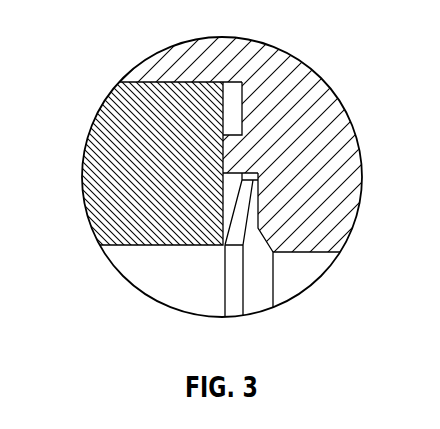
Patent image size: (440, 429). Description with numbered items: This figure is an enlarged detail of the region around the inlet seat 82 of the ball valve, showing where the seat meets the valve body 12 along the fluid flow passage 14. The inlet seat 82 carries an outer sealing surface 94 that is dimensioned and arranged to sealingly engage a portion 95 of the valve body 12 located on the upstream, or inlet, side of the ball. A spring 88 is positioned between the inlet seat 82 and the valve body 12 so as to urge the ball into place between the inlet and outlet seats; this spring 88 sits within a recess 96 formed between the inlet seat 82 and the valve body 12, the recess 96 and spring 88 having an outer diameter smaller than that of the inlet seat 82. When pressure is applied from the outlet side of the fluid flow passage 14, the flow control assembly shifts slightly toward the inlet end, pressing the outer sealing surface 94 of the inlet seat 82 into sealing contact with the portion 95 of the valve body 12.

The valve body 12 is at (358, 142).
The fluid flow passage 14 is at (201, 306).
The inlet seat 82 is at (90, 171).
The spring 88 is at (305, 280).
The outer sealing surface 94 is at (222, 170).
The portion of valve body 95 is at (226, 156).
The recess 96 is at (258, 237).